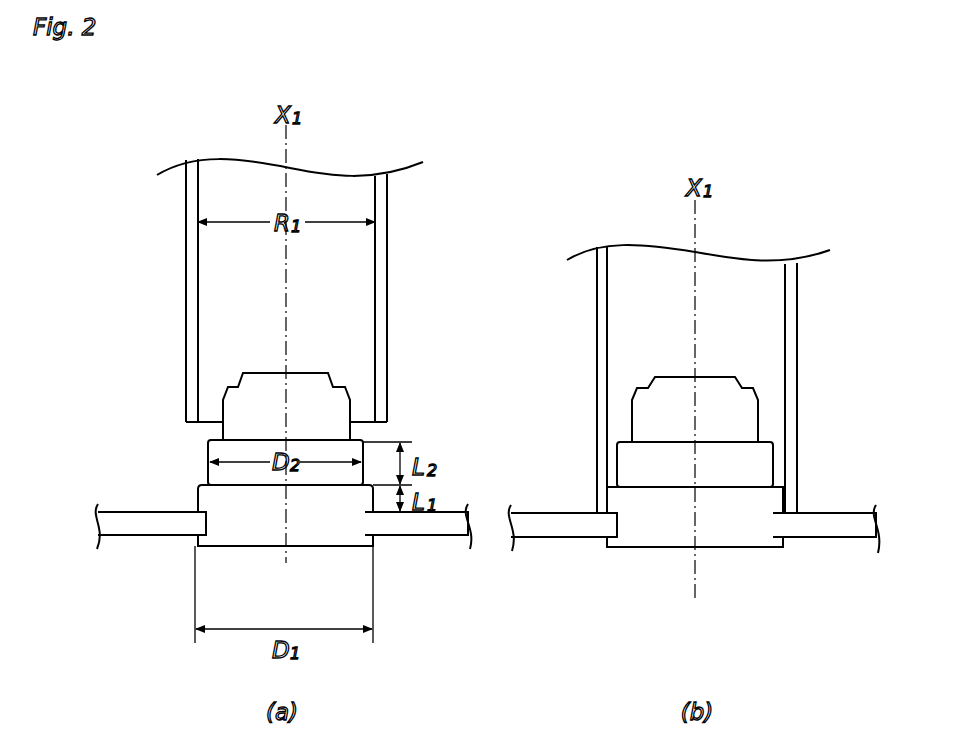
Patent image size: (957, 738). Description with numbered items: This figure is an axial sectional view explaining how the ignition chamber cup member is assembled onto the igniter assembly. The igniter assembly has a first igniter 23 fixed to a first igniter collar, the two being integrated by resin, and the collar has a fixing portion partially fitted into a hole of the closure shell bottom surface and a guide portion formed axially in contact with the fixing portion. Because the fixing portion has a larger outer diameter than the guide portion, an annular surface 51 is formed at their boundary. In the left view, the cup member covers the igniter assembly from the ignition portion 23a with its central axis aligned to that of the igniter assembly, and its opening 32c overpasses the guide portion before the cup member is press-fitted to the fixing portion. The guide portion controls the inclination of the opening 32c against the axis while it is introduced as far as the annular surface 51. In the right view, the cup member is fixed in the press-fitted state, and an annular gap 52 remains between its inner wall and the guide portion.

The first igniter 23 is at (303, 376).
The ignition portion 23a is at (707, 382).
The opening 32c is at (378, 426).
The annular surface 51 is at (207, 481).
The annular gap 52 is at (612, 467).